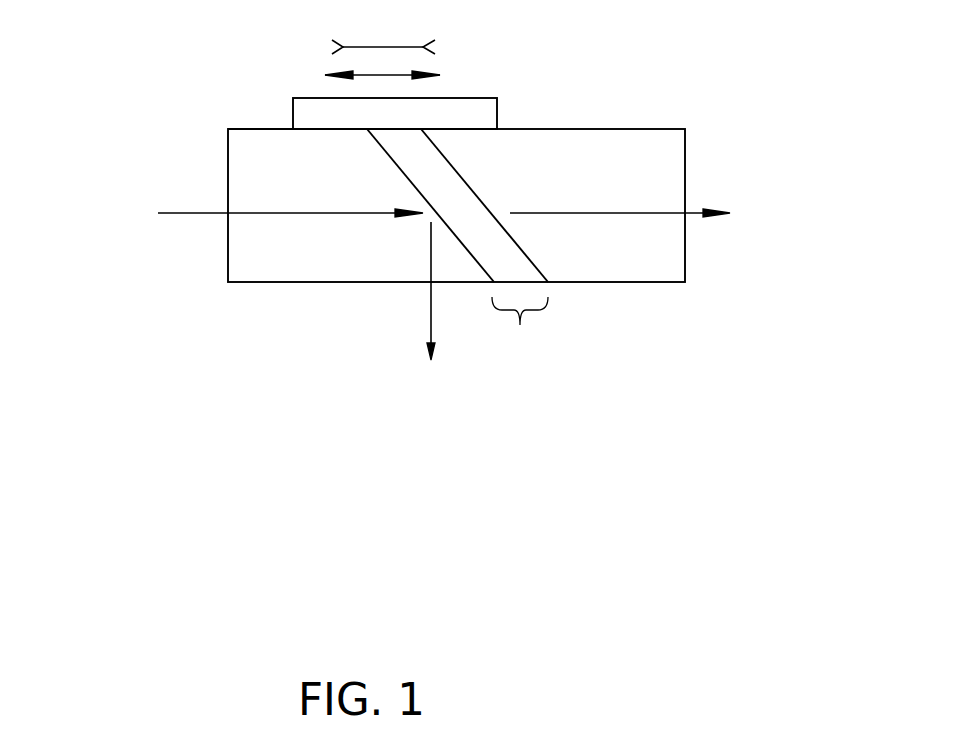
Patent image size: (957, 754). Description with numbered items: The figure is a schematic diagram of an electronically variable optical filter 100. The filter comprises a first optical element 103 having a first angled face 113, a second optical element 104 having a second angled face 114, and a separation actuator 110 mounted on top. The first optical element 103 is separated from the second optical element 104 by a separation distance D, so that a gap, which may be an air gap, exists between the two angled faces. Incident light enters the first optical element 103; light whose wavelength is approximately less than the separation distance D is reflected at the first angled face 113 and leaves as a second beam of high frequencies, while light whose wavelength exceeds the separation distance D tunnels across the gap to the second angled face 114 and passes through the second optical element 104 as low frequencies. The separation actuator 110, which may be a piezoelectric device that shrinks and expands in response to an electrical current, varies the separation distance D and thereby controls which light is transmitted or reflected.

The electronically variable optical filter 100 is at (450, 323).
The first optical element 103 is at (252, 128).
The second optical element 104 is at (602, 128).
The separation actuator 110 is at (483, 98).
The first angled face 113 is at (399, 169).
The second angled face 114 is at (515, 248).